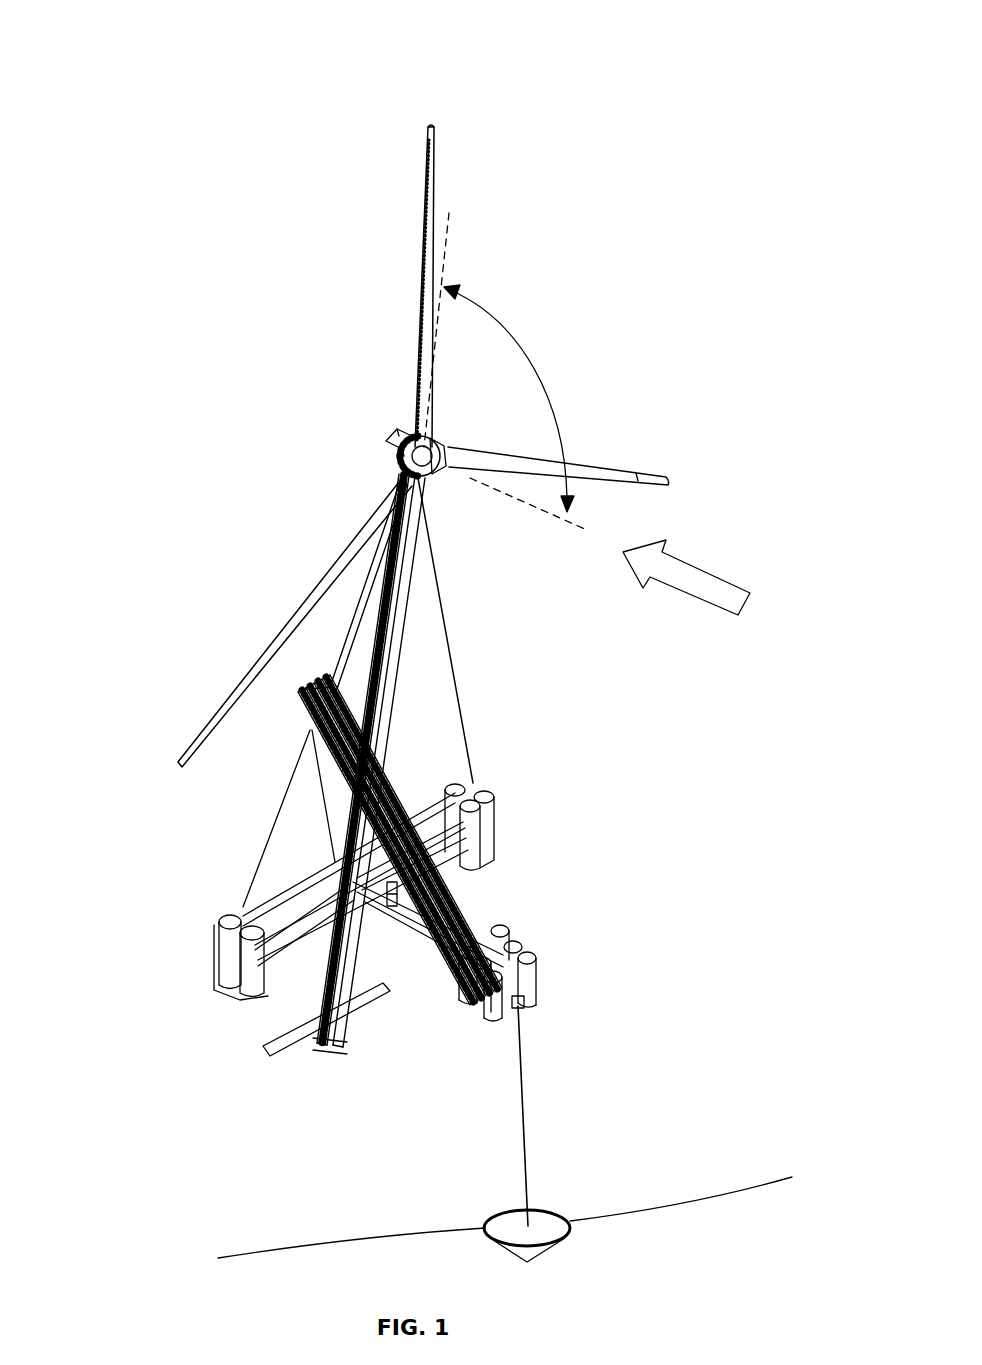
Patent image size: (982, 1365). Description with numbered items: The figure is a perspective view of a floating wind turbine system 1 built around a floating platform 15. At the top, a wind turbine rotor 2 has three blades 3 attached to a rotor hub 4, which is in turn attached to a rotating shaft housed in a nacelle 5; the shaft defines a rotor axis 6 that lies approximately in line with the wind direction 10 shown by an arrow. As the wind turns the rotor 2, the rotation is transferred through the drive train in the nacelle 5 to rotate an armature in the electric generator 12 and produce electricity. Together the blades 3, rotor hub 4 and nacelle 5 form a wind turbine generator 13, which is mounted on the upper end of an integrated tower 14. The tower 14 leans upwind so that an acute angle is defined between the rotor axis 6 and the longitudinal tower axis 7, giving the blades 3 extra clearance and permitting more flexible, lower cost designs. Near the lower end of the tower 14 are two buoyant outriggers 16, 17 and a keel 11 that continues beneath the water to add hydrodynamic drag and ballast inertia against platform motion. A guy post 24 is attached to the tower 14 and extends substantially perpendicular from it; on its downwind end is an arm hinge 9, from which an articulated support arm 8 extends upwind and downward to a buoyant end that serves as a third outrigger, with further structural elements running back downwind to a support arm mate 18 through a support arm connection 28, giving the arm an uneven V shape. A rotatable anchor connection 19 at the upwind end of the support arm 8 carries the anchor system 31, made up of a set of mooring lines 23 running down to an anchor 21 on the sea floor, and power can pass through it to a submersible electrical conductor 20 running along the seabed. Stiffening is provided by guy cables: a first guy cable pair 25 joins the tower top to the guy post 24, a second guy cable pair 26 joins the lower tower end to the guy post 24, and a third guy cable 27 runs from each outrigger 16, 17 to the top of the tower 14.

The floating wind turbine system 1 is at (466, 100).
The wind turbine rotor 2 is at (556, 306).
The blades 3 is at (412, 257).
The rotor hub 4 is at (438, 490).
The nacelle 5 is at (392, 420).
The rotor axis 6 is at (518, 512).
The longitudinal tower axis 7 is at (458, 236).
The articulated support arm 8 is at (540, 927).
The arm hinge 9 is at (305, 722).
The wind direction 10 is at (704, 549).
The keel 11 is at (242, 1035).
The electric generator 12 is at (392, 466).
The wind turbine generator 13 is at (296, 430).
The integrated tower 14 is at (413, 667).
The floating platform 15 is at (612, 703).
The buoyant outrigger 16 is at (212, 900).
The buoyant outrigger 17 is at (520, 828).
The support arm mate 18 is at (386, 906).
The rotatable anchor connection 19 is at (530, 1008).
The submersible electrical conductor 20 is at (257, 1237).
The anchor 21 is at (577, 1200).
The mooring lines 23 is at (545, 1110).
The guy post 24 is at (360, 712).
The first type of guy cable pair 25 is at (338, 623).
The second type of guy cable pair 26 is at (308, 752).
The third type of guy cable 27 is at (283, 843).
The support arm connection 28 is at (397, 906).
The anchor system 31 is at (672, 1008).